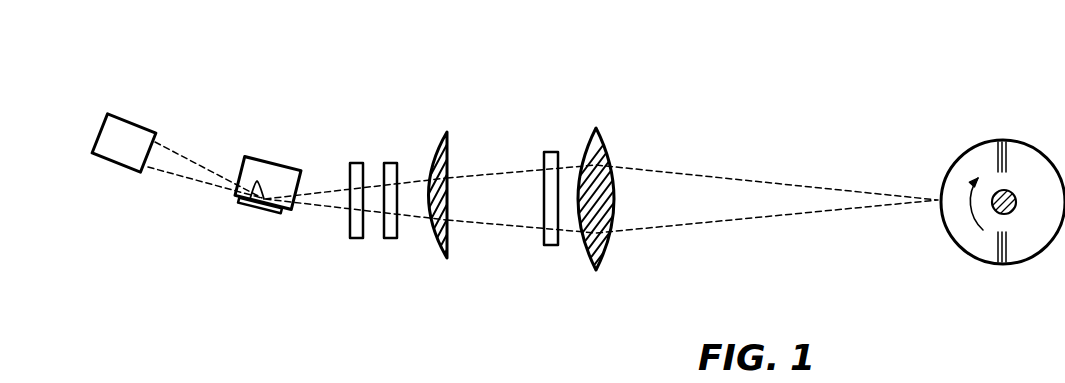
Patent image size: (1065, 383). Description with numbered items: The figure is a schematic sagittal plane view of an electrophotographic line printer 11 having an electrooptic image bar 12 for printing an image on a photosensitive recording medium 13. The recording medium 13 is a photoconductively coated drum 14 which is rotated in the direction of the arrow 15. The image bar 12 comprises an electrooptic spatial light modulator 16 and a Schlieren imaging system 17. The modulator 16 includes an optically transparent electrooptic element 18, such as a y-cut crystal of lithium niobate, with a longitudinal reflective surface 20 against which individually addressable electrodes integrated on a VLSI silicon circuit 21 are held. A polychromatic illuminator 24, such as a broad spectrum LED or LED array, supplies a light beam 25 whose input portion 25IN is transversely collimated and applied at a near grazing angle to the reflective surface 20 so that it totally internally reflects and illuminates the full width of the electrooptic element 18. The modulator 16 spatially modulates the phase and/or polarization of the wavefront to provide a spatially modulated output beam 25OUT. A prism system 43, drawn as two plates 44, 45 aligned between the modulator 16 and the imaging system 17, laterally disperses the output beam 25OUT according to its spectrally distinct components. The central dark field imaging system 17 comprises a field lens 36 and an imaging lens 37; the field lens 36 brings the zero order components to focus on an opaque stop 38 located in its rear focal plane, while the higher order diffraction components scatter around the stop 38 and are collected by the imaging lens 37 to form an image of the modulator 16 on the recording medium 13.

The electrophotographic line printer 11 is at (700, 160).
The electrooptic image bar 12 is at (597, 320).
The photosensitive recording medium 13 is at (950, 167).
The photoconductively coated drum 14 is at (955, 243).
The arrow 15 is at (970, 207).
The electrooptic spatial light modulator 16 is at (281, 150).
The Schlieren imaging system 17 is at (597, 113).
The electrooptic element 18 is at (242, 160).
The reflective surface 20 is at (252, 190).
The VLSI silicon circuit 21 is at (242, 205).
The polychromatic illuminator 24 is at (100, 130).
The light beam 25 is at (292, 136).
The input light beam 25IN is at (176, 163).
The spatially modulated output beam 25OUT is at (332, 197).
The field lens 36 is at (437, 242).
The imaging lens 37 is at (608, 248).
The opaque stop 38 is at (552, 245).
The prism system 43 is at (377, 248).
The plate 44 is at (350, 220).
The plate 45 is at (388, 163).